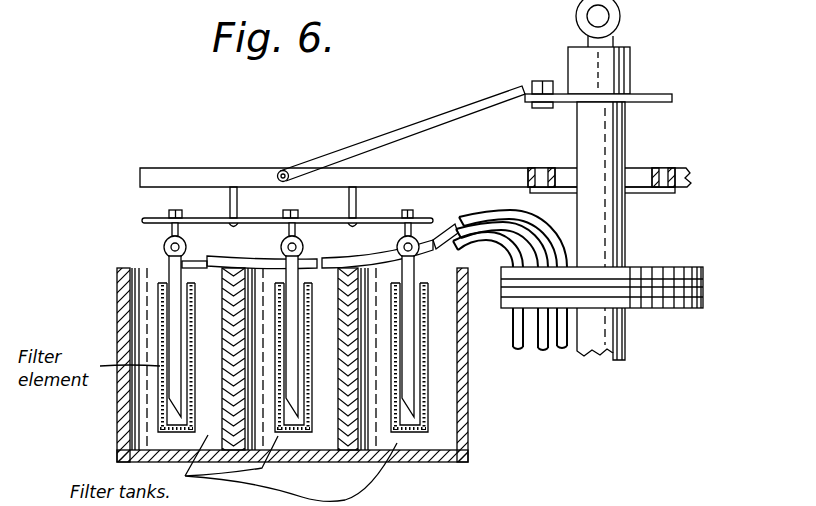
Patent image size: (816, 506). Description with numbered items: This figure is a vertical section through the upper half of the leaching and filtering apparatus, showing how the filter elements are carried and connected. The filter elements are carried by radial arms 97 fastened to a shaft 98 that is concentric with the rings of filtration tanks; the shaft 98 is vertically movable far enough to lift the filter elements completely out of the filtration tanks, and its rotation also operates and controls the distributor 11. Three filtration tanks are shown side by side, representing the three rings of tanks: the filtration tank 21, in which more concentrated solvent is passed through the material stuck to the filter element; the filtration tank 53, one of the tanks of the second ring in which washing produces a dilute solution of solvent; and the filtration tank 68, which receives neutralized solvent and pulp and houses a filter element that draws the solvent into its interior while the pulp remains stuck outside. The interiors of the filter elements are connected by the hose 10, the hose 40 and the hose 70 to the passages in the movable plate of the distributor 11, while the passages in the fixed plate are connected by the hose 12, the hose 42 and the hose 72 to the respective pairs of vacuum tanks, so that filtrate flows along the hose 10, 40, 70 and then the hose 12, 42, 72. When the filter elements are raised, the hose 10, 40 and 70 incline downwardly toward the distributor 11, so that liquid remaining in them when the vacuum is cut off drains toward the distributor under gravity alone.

The hose 10 is at (488, 290).
The distributor 11 is at (685, 268).
The hose 12 is at (512, 333).
The filtration tank 21 is at (143, 272).
The hose 40 is at (506, 293).
The hose 42 is at (540, 343).
The filtration tank 53 is at (317, 438).
The filtration tank 68 is at (445, 425).
The hose 70 is at (530, 302).
The hose 72 is at (560, 348).
The radial arm 97 is at (172, 157).
The shaft 98 is at (612, 133).